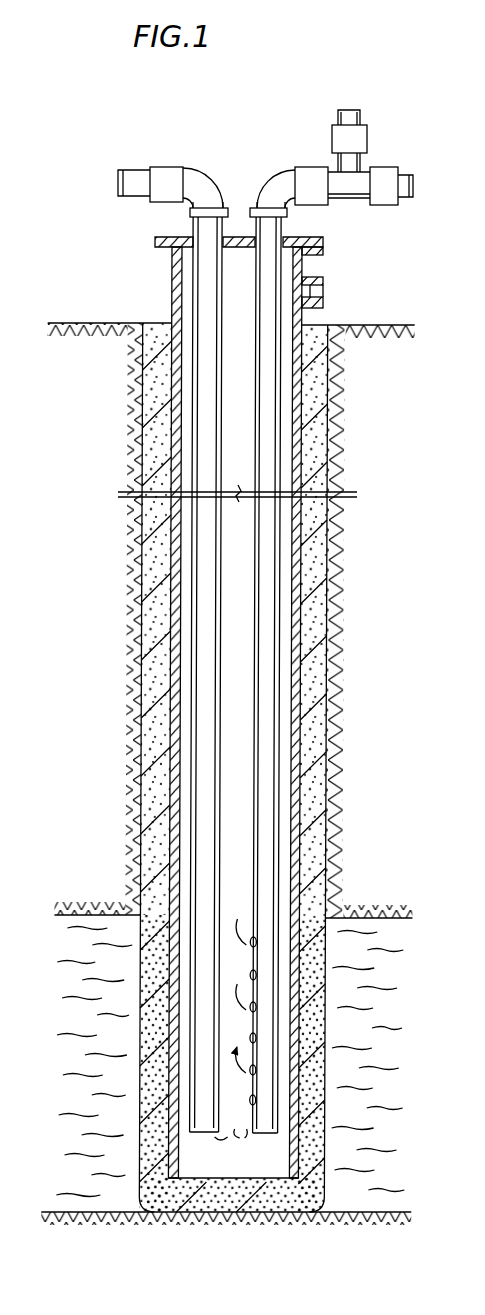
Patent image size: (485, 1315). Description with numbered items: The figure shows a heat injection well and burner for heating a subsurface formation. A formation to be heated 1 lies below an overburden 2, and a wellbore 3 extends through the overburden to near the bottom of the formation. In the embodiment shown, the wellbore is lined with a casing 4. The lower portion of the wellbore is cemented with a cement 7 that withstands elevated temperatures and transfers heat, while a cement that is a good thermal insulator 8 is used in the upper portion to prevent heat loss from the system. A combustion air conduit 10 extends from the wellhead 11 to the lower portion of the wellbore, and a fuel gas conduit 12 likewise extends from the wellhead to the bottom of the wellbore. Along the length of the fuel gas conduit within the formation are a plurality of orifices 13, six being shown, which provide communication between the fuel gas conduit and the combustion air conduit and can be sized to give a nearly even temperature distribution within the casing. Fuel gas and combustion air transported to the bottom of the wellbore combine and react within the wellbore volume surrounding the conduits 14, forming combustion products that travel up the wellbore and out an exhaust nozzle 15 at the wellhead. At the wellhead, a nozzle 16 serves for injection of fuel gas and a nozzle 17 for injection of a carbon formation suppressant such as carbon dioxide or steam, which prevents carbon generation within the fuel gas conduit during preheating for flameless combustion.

The formation to be heated 1 is at (95, 1087).
The overburden 2 is at (115, 652).
The wellbore 3 is at (235, 533).
The casing 4 is at (303, 417).
The cement 7 is at (157, 1003).
The thermally insulating cement 8 is at (157, 824).
The combustion air conduit 10 is at (203, 637).
The wellhead 11 is at (170, 286).
The fuel gas conduit 12 is at (288, 461).
The orifices 13 is at (258, 1070).
The wellbore volume surrounding the conduits 14 is at (237, 902).
The exhaust nozzle 15 is at (326, 291).
The fuel gas injection nozzle 16 is at (352, 109).
The oxidant suppressant injection nozzle 17 is at (421, 184).